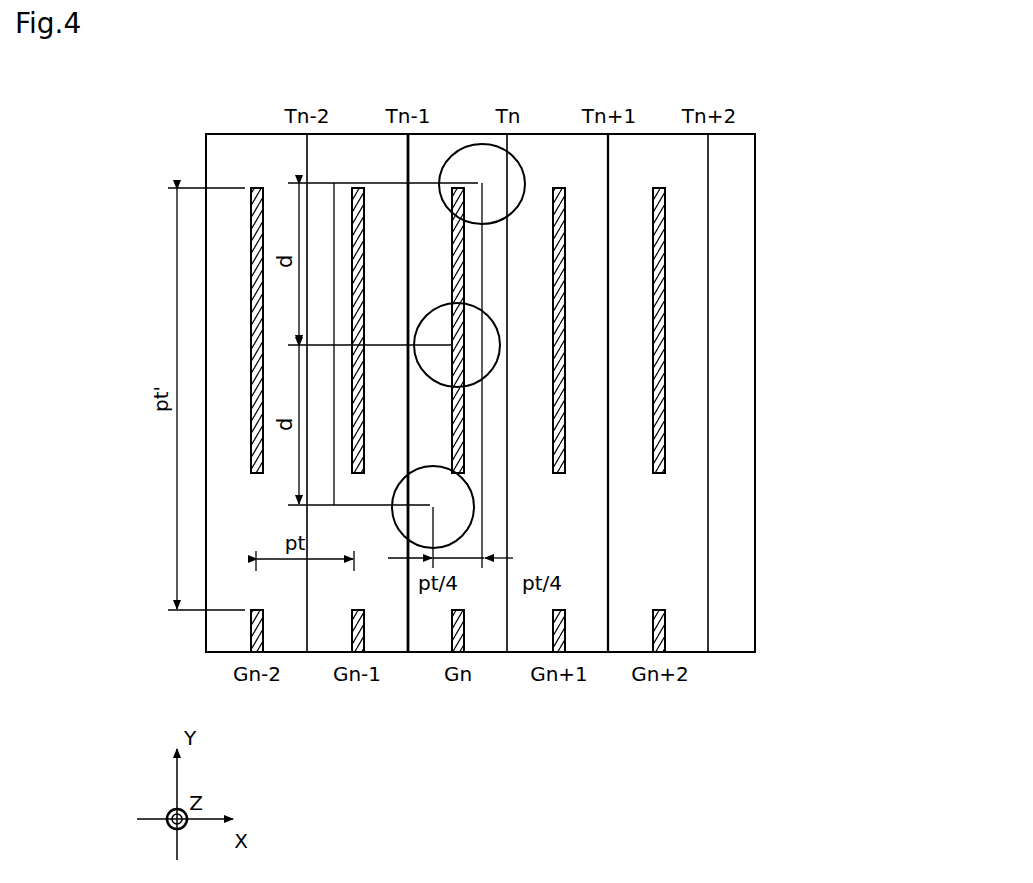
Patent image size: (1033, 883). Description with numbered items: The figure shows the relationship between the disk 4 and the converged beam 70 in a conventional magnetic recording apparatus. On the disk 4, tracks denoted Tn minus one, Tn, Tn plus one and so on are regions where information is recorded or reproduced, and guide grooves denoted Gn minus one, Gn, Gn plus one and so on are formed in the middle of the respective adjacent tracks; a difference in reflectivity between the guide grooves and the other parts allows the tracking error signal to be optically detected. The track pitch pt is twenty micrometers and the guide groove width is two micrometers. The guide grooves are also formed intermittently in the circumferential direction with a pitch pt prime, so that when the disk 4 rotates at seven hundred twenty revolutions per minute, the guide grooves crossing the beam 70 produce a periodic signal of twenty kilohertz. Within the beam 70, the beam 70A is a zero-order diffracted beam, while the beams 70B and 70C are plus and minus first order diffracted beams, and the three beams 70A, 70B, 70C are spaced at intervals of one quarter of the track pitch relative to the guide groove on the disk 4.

The disk 4 is at (755, 156).
The beam 70 is at (639, 346).
The beam 70A is at (502, 347).
The beam 70B is at (514, 207).
The beam 70C is at (475, 502).